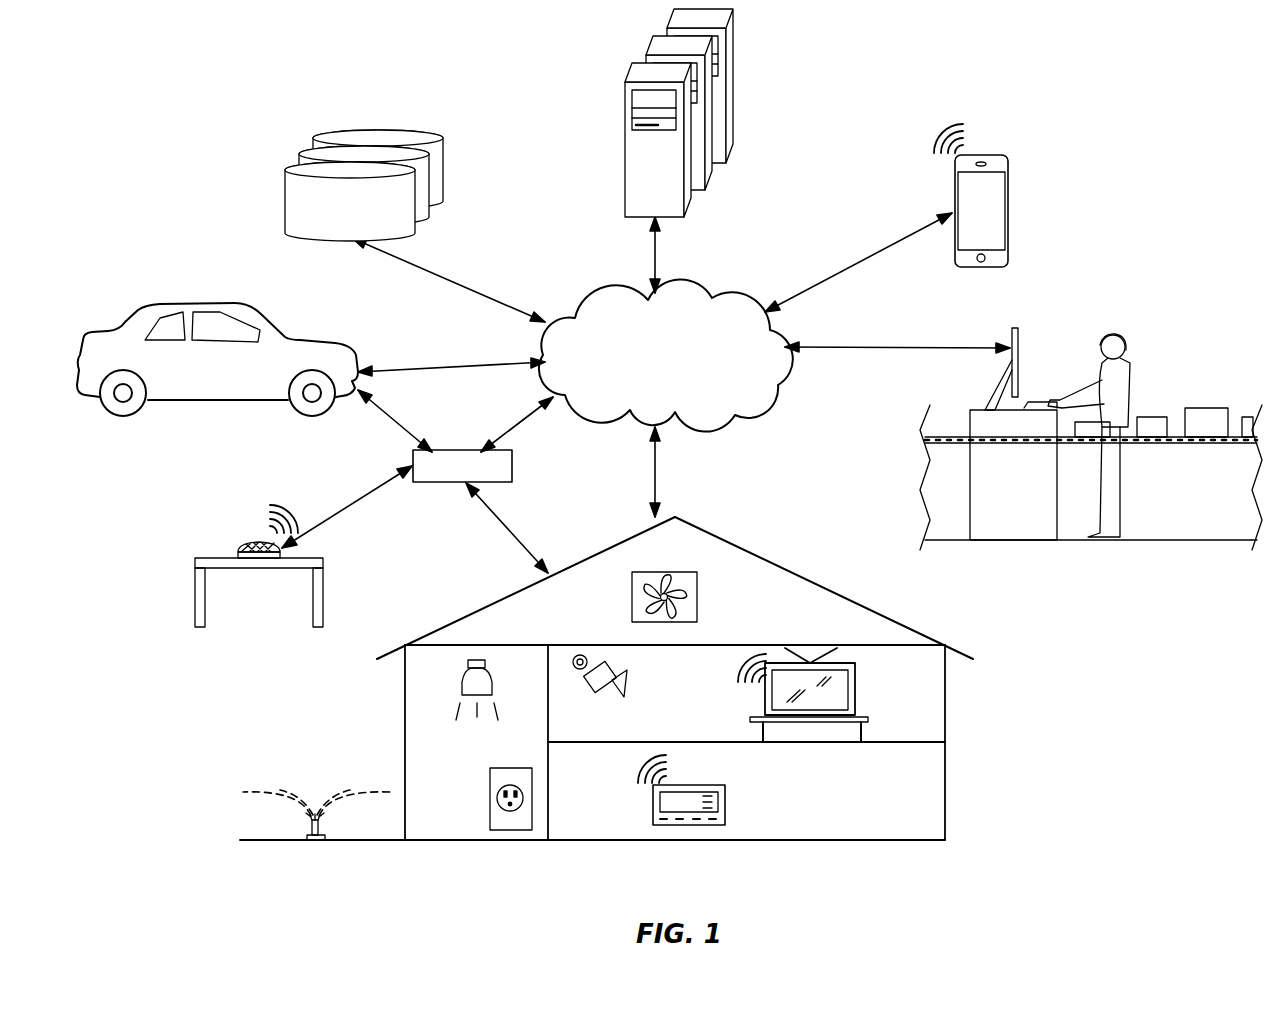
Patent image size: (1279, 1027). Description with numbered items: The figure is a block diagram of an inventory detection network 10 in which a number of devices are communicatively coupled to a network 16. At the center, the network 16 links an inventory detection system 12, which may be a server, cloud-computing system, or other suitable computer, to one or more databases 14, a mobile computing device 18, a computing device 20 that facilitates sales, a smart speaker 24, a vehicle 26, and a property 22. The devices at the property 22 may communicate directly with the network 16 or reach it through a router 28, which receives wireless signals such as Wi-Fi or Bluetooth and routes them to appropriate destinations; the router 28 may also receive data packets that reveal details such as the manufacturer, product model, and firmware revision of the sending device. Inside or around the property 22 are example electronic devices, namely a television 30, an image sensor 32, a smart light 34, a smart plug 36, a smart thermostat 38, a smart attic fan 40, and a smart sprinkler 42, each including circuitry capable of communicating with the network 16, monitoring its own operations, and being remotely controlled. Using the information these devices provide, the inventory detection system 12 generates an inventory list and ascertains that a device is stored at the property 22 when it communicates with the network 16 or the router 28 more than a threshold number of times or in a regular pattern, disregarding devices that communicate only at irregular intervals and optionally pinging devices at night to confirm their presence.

The inventory detection network 10 is at (1148, 57).
The inventory detection system 12 is at (627, 147).
The databases 14 is at (285, 196).
The network 16 is at (693, 296).
The mobile computing device 18 is at (985, 156).
The computing device 20 is at (1018, 330).
The property 22 is at (793, 573).
The smart speaker 24 is at (257, 545).
The vehicle 26 is at (203, 303).
The router 28 is at (512, 465).
The television 30 is at (856, 690).
The image sensor 32 is at (628, 677).
The smart light 34 is at (490, 680).
The smart plug 36 is at (500, 790).
The smart thermostat 38 is at (727, 808).
The smart attic fan 40 is at (697, 590).
The smart sprinkler 42 is at (305, 826).